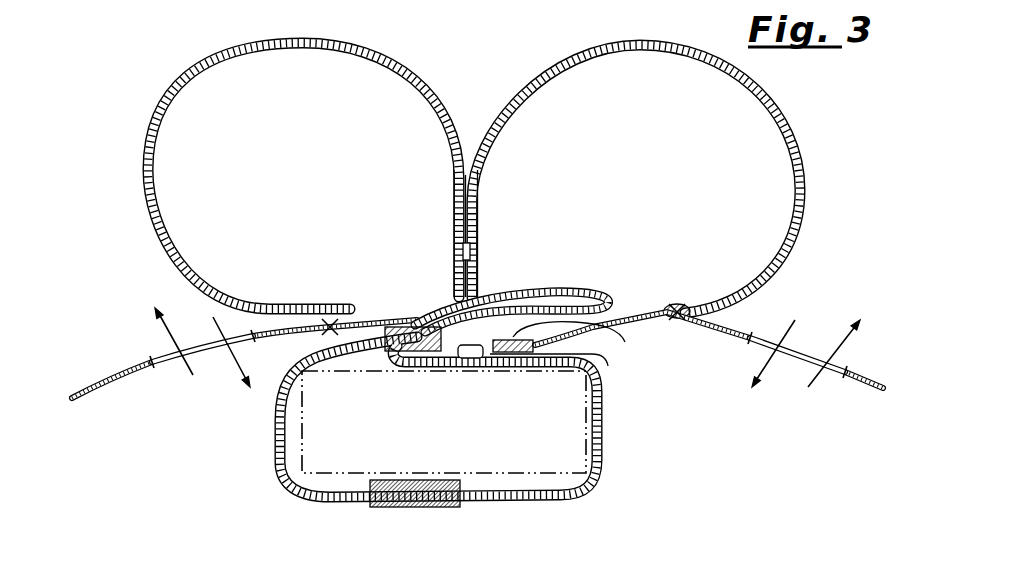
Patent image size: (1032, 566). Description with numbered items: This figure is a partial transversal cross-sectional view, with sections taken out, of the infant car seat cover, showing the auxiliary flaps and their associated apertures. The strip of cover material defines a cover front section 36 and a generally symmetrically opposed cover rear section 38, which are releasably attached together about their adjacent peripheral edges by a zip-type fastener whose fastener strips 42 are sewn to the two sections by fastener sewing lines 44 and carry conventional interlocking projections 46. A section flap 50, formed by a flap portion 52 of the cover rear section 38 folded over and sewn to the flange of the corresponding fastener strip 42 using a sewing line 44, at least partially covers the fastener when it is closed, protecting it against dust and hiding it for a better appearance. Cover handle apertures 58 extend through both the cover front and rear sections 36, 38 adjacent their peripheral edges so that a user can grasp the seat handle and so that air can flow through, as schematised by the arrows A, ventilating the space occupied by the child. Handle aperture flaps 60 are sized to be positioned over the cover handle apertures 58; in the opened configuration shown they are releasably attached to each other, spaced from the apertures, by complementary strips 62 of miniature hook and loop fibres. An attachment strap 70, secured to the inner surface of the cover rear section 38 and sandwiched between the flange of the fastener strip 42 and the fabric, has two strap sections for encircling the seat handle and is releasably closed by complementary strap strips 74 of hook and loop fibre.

The cover front section 36 is at (868, 373).
The cover rear section 38 is at (102, 385).
The fastener strips 42 is at (440, 312).
The fastener sewing lines 44 is at (415, 360).
The interlocking projections 46 is at (473, 352).
The section flap 50 is at (616, 292).
The flap portion 52 is at (568, 288).
The cover handle apertures 58 is at (168, 366).
The handle aperture flaps 60 is at (368, 50).
The complementary strips 62 is at (481, 150).
The attachment strap 70 is at (290, 485).
The complementary strap strips 74 is at (462, 498).
The arrows A is at (193, 370).